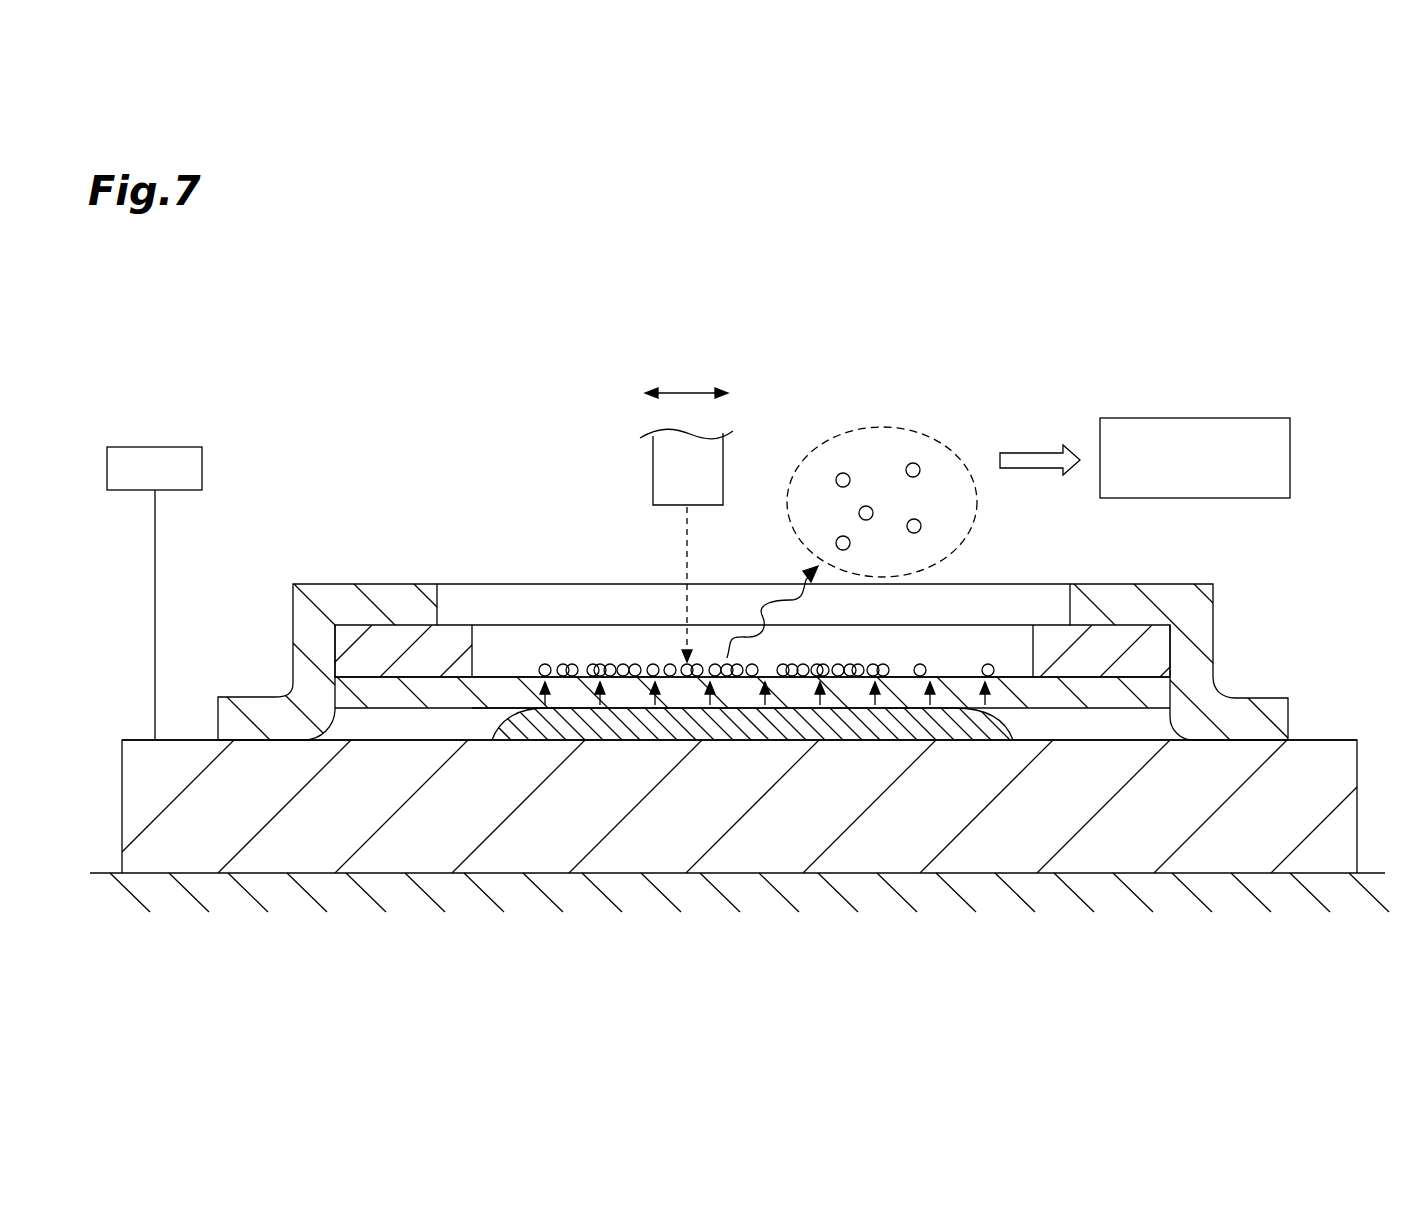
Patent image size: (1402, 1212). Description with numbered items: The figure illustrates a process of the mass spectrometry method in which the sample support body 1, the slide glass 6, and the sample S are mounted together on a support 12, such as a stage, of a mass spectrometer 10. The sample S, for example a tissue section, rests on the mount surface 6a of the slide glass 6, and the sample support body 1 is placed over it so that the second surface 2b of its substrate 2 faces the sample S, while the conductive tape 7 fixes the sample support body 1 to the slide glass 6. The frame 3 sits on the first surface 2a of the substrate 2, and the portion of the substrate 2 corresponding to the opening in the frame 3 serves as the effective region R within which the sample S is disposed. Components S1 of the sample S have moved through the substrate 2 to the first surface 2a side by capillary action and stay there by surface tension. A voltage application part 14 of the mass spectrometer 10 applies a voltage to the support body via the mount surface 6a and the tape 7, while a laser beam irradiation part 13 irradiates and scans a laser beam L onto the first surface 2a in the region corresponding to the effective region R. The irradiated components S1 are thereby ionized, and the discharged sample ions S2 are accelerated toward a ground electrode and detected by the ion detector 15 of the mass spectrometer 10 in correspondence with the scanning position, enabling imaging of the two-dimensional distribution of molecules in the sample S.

The sample support body 1 is at (1128, 624).
The substrate 2 is at (1153, 694).
The first surface 2a is at (504, 677).
The second surface 2b is at (481, 708).
The frame 3 is at (1052, 638).
The slide glass 6 is at (1345, 823).
The mount surface 6a is at (1310, 740).
The conductive tape 7 is at (248, 698).
The mass spectrometer 10 is at (1270, 335).
The support 12 is at (103, 873).
The laser beam irradiation part 13 is at (660, 473).
The voltage application part 14 is at (203, 460).
The ion detector 15 is at (1290, 457).
The laser beam L is at (687, 543).
The effective region R is at (1015, 676).
The sample S is at (1012, 731).
The components of the sample S1 is at (921, 663).
The sample ions S2 is at (913, 463).